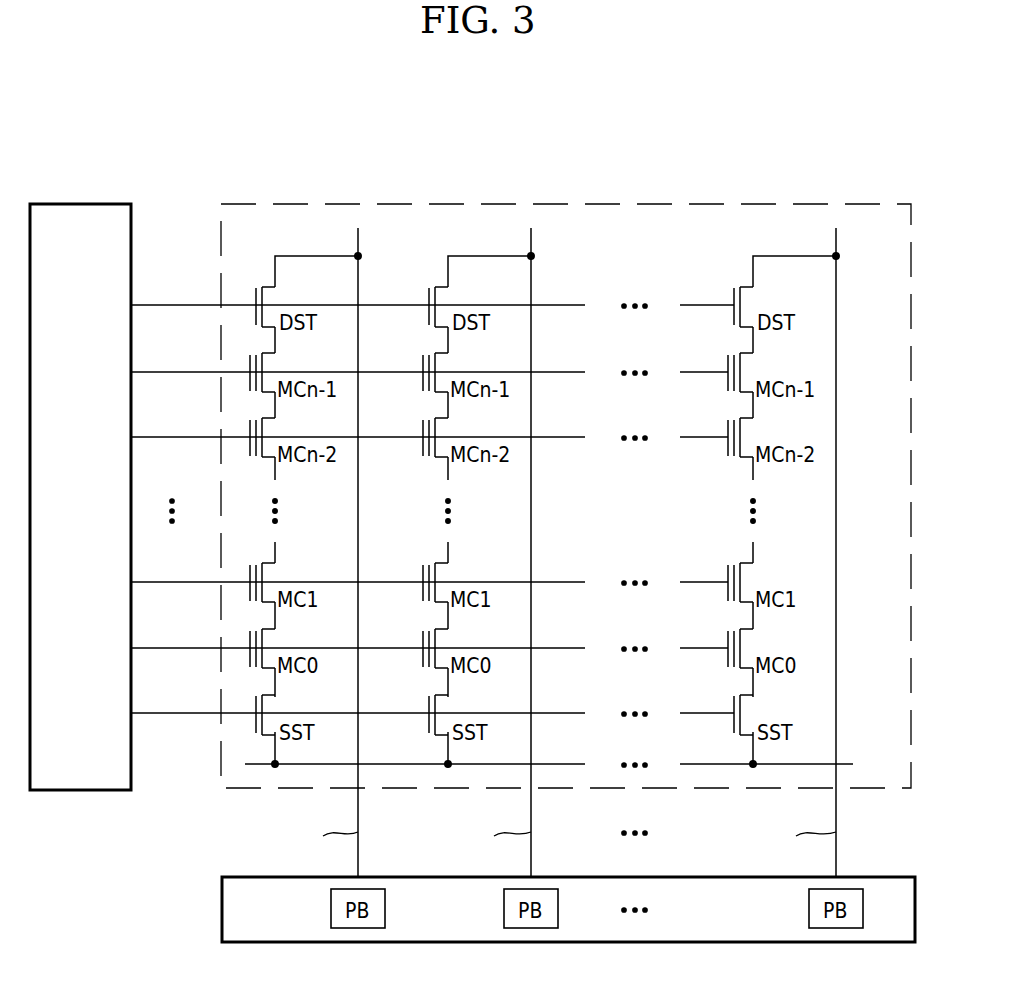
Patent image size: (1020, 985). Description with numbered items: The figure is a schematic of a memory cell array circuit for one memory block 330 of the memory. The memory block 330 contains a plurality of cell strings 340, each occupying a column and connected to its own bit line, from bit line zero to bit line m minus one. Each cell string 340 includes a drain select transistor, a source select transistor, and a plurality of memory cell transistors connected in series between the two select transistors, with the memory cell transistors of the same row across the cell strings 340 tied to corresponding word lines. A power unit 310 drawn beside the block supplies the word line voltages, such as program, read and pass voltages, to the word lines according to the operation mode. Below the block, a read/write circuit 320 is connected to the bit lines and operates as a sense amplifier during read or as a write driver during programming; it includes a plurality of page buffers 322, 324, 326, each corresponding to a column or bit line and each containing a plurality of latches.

The power unit 310 is at (80, 204).
The read/write circuit 320 is at (529, 909).
The page buffer 322 is at (331, 910).
The page buffer 324 is at (504, 910).
The page buffer 326 is at (809, 910).
The memory block 330 is at (521, 526).
The cell string 340 is at (265, 240).